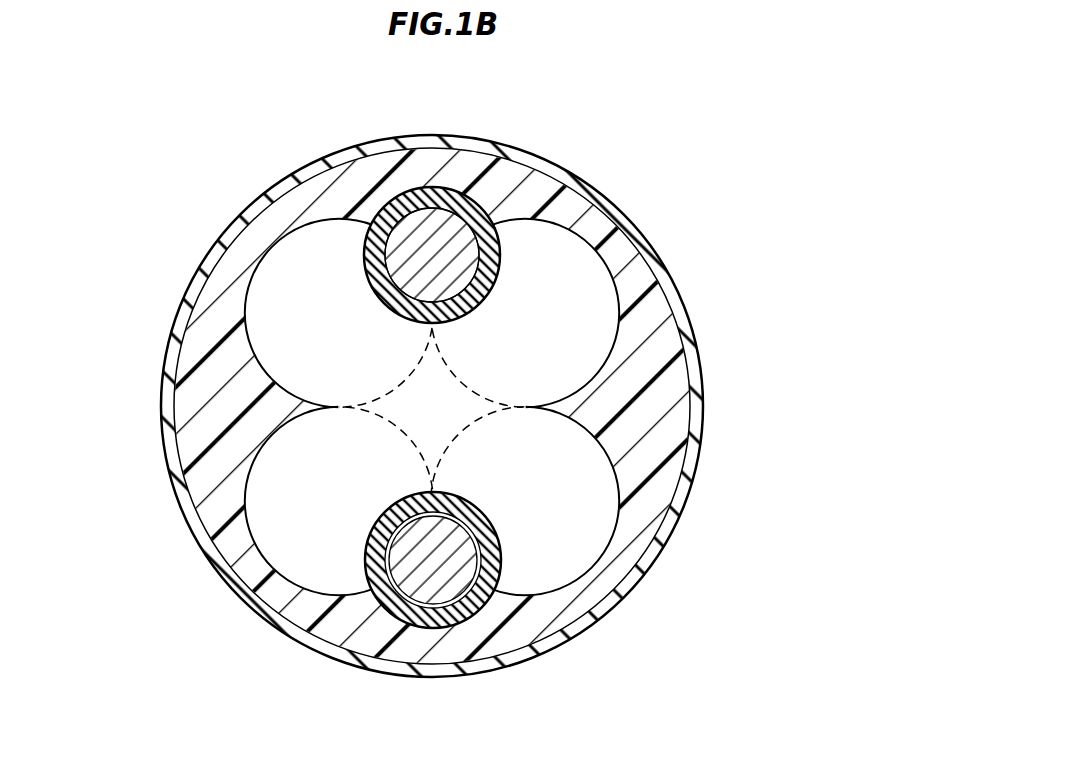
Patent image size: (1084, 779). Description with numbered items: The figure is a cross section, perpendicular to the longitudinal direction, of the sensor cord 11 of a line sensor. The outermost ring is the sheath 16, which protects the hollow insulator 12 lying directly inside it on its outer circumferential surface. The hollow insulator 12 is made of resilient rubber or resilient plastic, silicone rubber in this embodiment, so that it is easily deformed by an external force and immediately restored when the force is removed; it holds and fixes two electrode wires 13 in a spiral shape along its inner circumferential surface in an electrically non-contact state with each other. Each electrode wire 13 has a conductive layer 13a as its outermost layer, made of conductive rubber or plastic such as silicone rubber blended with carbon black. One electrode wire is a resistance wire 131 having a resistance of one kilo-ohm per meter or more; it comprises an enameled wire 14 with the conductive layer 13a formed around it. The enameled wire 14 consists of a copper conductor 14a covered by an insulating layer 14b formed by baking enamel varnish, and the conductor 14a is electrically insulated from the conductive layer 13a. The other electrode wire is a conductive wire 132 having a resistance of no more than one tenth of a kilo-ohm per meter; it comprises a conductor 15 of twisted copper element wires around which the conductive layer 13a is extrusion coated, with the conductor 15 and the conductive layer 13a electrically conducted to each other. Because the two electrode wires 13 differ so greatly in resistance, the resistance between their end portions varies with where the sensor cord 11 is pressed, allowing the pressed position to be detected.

The sensor cord 11 is at (318, 155).
The hollow insulator 12 is at (650, 343).
The electrode wire 13 is at (497, 298).
The conductive layer 13a is at (487, 273).
The resistance wire 131 is at (507, 570).
The conductive wire 132 is at (497, 212).
The enameled wire 14 is at (591, 672).
The conductor 14a is at (458, 586).
The insulating layer 14b is at (470, 606).
The conductor 15 is at (463, 252).
The sheath 16 is at (672, 528).